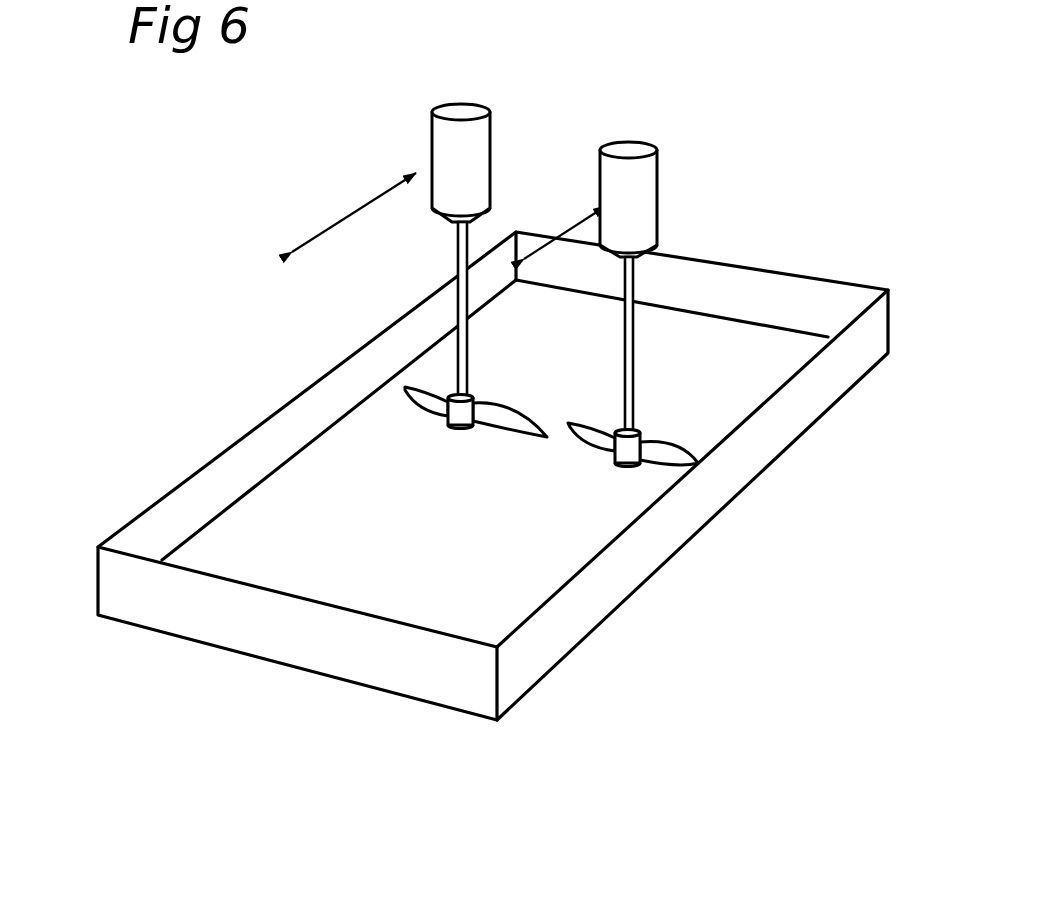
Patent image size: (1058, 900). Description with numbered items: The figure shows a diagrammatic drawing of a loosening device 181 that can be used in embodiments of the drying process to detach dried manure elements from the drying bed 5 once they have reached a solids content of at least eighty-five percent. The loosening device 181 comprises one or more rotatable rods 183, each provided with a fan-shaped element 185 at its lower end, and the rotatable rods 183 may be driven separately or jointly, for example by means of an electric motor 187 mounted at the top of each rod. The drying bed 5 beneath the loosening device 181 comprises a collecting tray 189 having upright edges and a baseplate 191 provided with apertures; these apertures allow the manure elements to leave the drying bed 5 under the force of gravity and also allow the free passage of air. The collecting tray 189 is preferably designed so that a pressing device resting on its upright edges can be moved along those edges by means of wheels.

The drying bed 5 is at (257, 387).
The loosening device 181 is at (672, 102).
The rotatable rod 183 is at (458, 262).
The fan-shaped element 185 is at (405, 387).
The electric motor 187 is at (448, 132).
The collecting tray 189 is at (97, 572).
The baseplate 191 is at (443, 718).